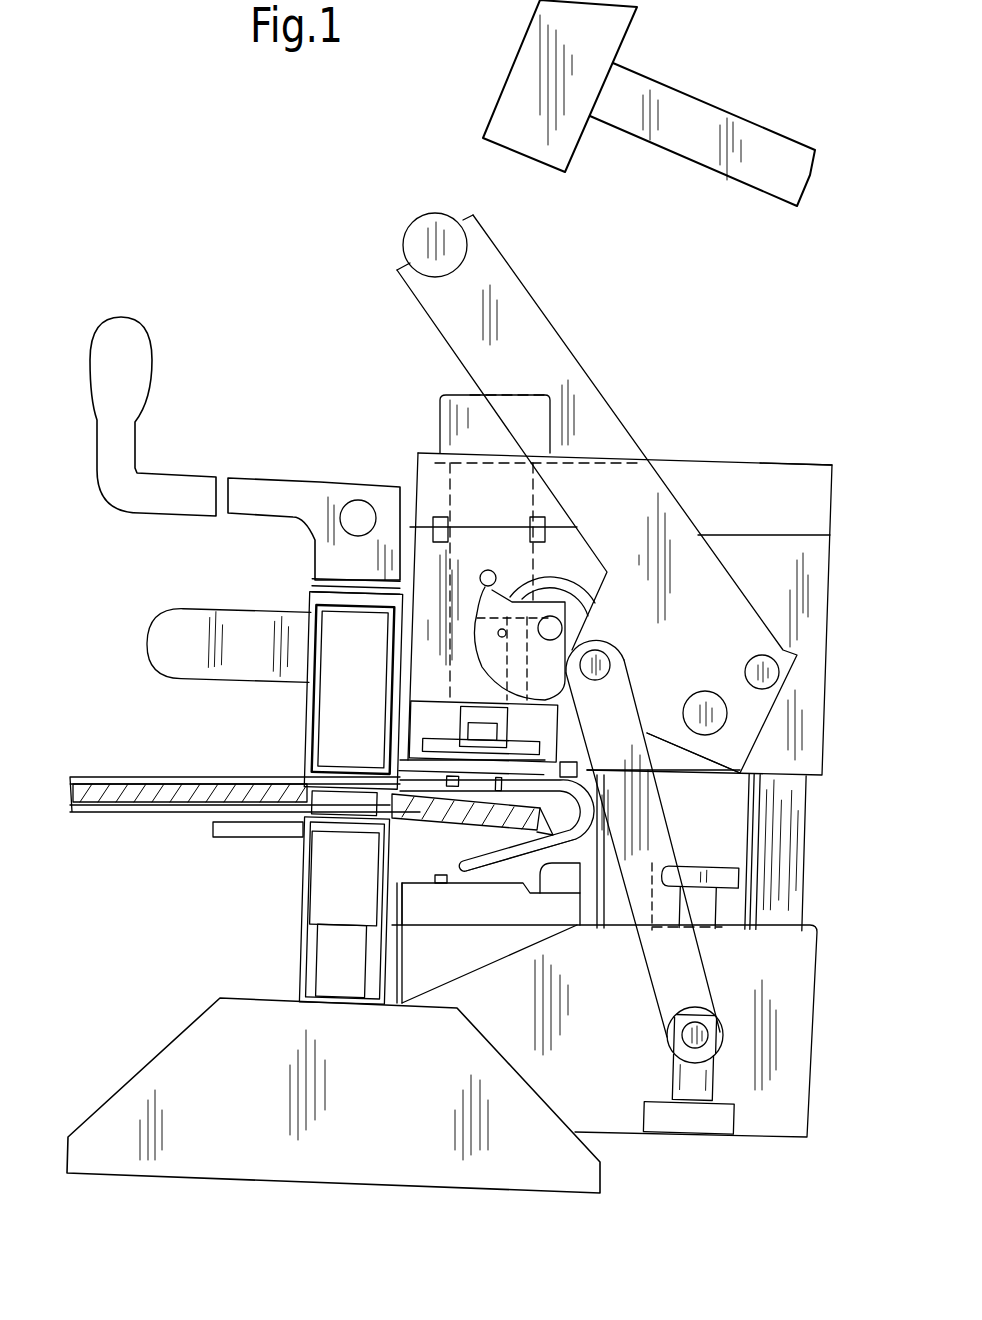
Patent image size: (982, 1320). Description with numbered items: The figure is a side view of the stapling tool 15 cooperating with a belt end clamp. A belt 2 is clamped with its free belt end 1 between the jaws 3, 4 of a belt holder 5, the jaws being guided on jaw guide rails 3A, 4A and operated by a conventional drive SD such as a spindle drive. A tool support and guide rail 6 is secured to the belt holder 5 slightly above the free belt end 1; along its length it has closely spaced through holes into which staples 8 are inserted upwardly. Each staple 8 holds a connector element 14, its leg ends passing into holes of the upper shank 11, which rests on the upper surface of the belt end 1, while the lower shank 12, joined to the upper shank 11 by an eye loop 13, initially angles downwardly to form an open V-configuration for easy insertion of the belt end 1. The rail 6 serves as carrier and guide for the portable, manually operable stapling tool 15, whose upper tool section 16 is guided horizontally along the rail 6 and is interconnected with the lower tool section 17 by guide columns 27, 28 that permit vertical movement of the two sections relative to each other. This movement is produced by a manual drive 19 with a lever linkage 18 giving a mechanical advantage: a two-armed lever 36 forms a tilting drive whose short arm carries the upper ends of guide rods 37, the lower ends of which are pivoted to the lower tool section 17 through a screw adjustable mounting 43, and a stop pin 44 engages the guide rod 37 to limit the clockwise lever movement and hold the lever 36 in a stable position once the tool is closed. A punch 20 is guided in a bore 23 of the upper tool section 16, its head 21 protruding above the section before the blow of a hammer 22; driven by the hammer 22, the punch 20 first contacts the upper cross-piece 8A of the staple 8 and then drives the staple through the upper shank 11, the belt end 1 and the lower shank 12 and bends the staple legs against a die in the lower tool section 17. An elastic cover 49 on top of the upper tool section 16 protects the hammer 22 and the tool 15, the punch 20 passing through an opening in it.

The free belt end 1 is at (587, 818).
The belt 2 is at (72, 792).
The jaw 3 is at (343, 827).
The jaw guide rail 3A is at (300, 942).
The jaw 4 is at (308, 770).
The jaw guide rail 4A is at (307, 693).
The belt holder 5 is at (182, 1057).
The tool support and guide rail 6 is at (430, 743).
The staple 8 is at (467, 720).
The upper cross-piece of the staple 8A is at (480, 717).
The upper shank 11 is at (573, 775).
The lower shank 12 is at (533, 843).
The eye loop 13 is at (587, 800).
The connector element 14 is at (594, 777).
The stapling tool 15 is at (796, 444).
The upper tool section 16 is at (807, 593).
The lower tool section 17 is at (793, 1033).
The lever linkage 18 is at (705, 607).
The manual drive 19 is at (548, 294).
The punch 20 is at (432, 415).
The punch head 21 is at (480, 390).
The hammer 22 is at (603, 39).
The bore 23 is at (443, 593).
The guide column 27 is at (614, 915).
The guide column 28 is at (777, 915).
The two-armed lever 36 is at (542, 350).
The guide rod 37 is at (665, 965).
The screw adjustable mounting 43 is at (723, 878).
The stop pin 44 is at (762, 667).
The elastic cover 49 is at (817, 507).
The drive SD is at (300, 464).